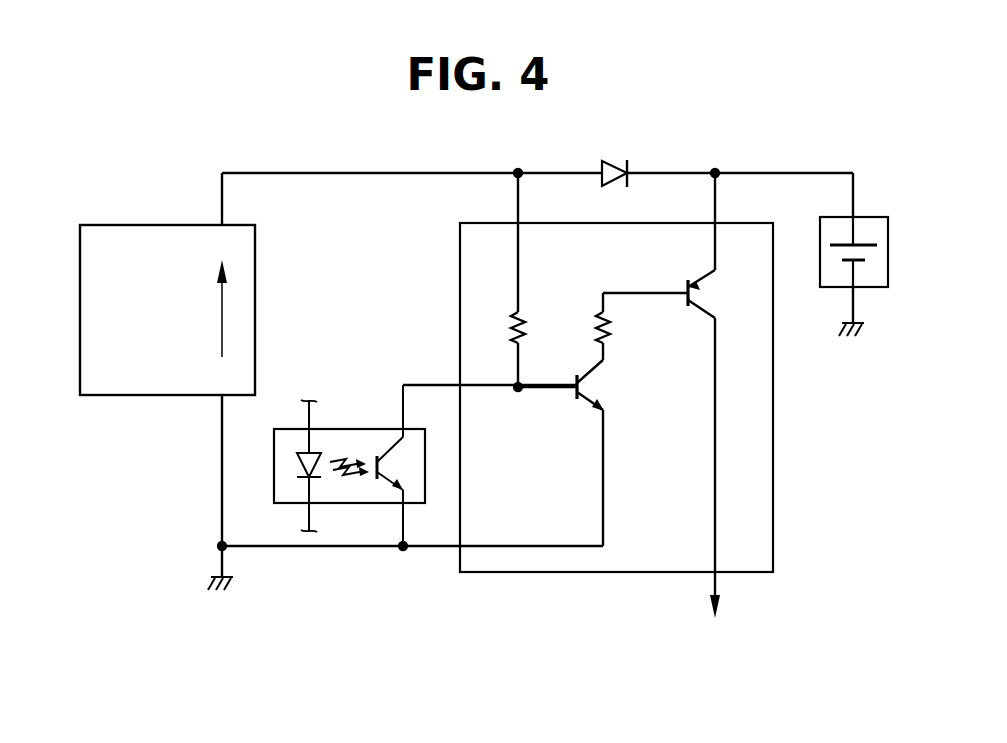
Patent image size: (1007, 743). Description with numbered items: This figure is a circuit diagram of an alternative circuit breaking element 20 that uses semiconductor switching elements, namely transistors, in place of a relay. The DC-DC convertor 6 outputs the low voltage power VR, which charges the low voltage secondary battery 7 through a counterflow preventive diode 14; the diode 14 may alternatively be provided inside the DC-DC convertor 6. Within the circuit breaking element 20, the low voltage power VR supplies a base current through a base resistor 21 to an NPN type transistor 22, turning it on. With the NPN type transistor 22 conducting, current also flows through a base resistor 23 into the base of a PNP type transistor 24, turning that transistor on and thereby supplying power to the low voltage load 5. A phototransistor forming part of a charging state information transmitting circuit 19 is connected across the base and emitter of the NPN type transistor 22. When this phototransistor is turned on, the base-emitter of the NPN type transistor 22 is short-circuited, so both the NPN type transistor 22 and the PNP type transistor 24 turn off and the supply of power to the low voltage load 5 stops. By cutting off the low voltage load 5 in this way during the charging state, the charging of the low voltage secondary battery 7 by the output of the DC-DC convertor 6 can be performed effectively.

The low voltage load 5 is at (712, 640).
The DC-DC convertor 6 is at (128, 225).
The low voltage secondary battery 7 is at (872, 217).
The counterflow preventive diode 14 is at (604, 162).
The charging state information transmitting circuit 19 is at (388, 429).
The circuit breaking element 20 is at (773, 450).
The base resistor 21 is at (540, 329).
The NPN type transistor 22 is at (605, 444).
The base resistor 23 is at (626, 329).
The PNP type transistor 24 is at (718, 432).